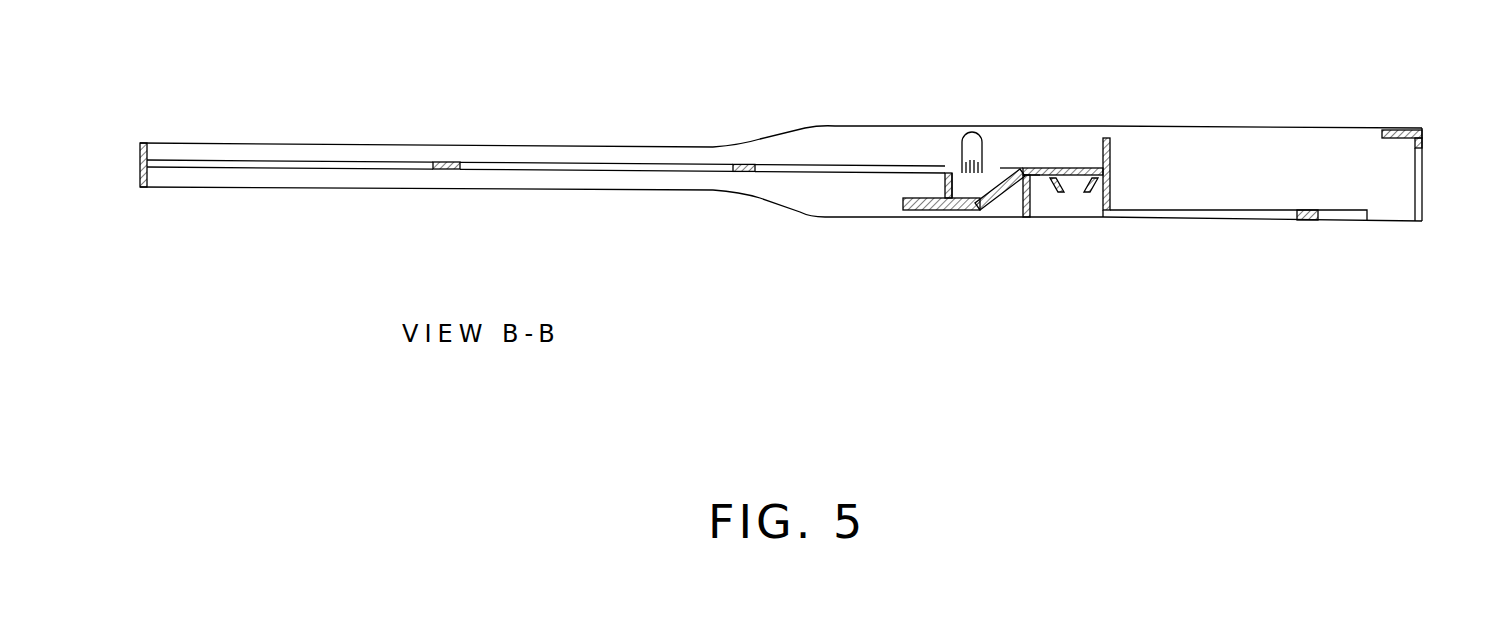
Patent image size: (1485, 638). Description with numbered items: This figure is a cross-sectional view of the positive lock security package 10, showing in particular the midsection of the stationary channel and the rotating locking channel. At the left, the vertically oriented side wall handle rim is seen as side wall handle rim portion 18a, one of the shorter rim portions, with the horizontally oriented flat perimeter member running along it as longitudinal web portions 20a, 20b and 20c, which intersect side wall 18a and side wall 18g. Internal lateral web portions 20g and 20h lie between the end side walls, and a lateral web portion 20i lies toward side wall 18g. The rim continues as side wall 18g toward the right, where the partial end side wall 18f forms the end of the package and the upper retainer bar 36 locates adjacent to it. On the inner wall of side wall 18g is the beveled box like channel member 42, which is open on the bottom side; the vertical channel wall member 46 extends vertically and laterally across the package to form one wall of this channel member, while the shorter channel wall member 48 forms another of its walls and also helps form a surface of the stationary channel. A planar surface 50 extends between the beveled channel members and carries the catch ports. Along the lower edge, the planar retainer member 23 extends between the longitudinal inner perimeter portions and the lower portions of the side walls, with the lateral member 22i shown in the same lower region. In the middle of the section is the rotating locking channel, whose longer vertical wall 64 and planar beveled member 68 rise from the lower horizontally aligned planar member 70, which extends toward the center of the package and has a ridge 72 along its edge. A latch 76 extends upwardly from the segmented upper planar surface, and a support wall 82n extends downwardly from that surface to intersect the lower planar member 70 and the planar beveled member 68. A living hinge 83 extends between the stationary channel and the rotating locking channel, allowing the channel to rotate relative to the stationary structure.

The positive lock security package 10 is at (714, 298).
The side wall handle rim portion 18a is at (357, 158).
The side wall 18g is at (838, 135).
The partial end side wall 18f is at (1422, 197).
The longitudinal web portion 20a is at (292, 170).
The longitudinal web portion 20b is at (628, 172).
The longitudinal web portion 20c is at (833, 175).
The internal lateral web portion 20g is at (158, 162).
The internal lateral web portion 20h is at (445, 170).
The lateral web portion 20i is at (747, 176).
The base plate 22i is at (1125, 223).
The planar retainer member 23 is at (1307, 220).
The upper retainer bar 36 is at (1425, 135).
The beveled box like channel member 42 is at (1087, 140).
The vertical channel wall member 46 is at (1110, 160).
The shorter channel wall member 48 is at (1022, 213).
The planar surface 50 is at (1040, 215).
The longer vertical wall 64 is at (942, 193).
The planar beveled member 68 is at (988, 212).
The lower horizontally aligned planar member 70 is at (902, 210).
The ridge 72 is at (937, 200).
The latch 76 is at (973, 133).
The support wall 82n is at (990, 172).
The living hinge 83 is at (1027, 172).